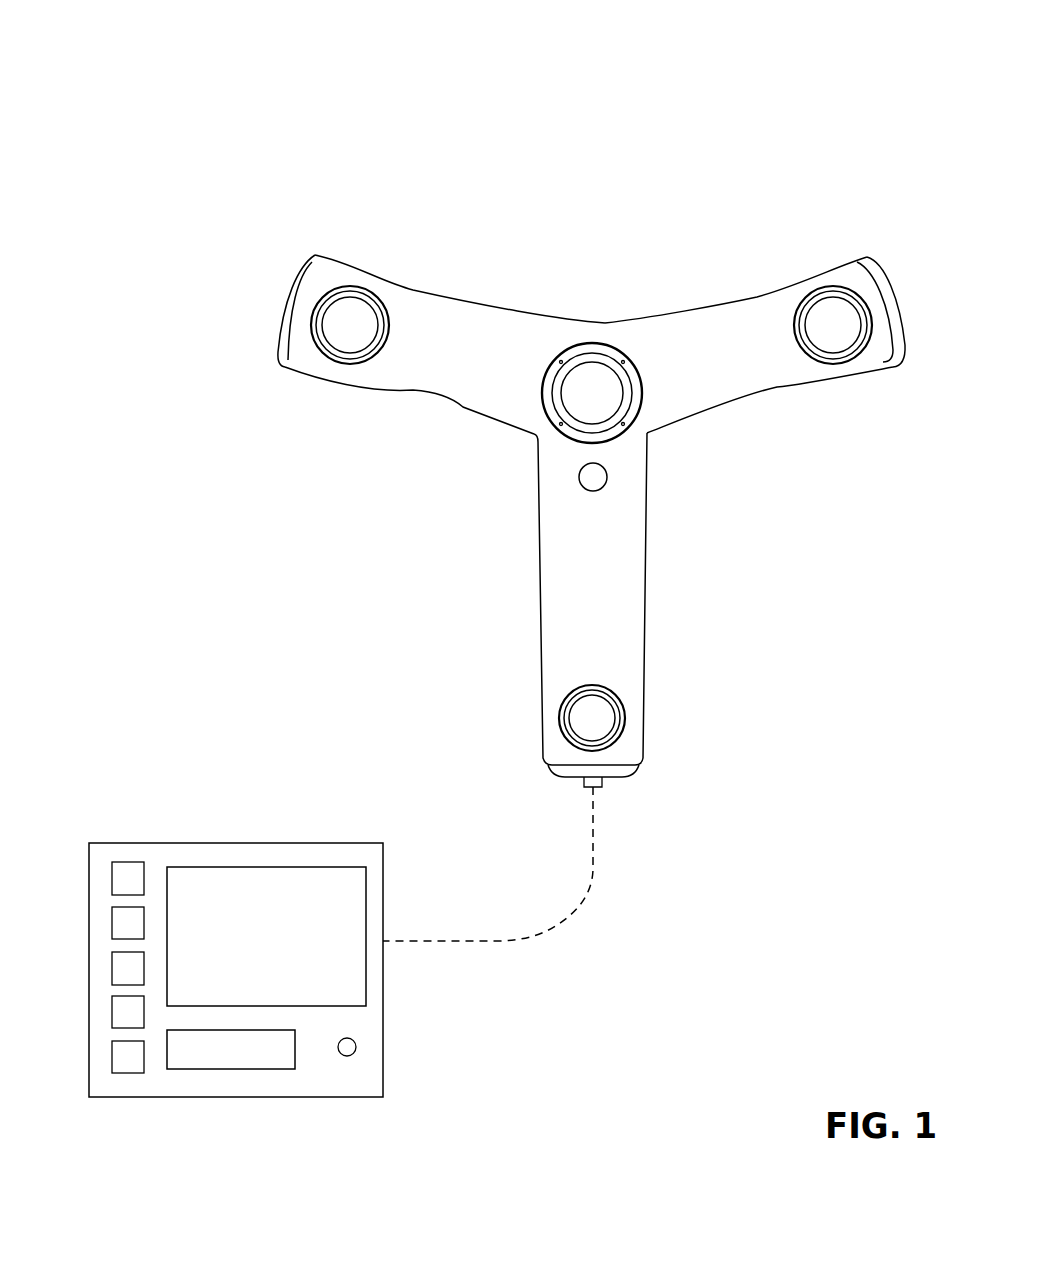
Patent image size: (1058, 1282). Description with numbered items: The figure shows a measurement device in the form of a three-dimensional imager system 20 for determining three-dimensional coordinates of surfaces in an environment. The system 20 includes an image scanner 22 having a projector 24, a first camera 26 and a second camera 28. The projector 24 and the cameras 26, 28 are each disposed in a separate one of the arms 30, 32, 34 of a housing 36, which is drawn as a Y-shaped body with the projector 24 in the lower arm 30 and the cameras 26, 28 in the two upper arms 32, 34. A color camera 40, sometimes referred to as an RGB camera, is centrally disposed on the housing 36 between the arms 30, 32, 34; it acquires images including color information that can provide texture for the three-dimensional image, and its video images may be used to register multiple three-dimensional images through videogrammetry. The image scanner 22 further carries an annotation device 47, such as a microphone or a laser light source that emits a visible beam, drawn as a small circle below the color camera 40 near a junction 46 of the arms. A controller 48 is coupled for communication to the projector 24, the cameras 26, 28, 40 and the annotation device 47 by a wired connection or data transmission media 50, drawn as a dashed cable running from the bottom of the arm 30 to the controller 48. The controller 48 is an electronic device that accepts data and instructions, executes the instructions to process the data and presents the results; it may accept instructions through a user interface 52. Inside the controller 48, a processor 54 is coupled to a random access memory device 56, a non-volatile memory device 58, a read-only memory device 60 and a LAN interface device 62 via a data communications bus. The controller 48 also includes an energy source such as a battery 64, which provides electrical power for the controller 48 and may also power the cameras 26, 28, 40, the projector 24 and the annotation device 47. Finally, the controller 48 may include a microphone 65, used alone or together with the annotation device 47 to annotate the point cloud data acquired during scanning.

The 3D imager system 20 is at (813, 100).
The image scanner 22 is at (882, 247).
The projector 24 is at (620, 728).
The first camera 26 is at (368, 305).
The second camera 28 is at (820, 303).
The arm 30 is at (543, 580).
The arm 32 is at (467, 407).
The arm 34 is at (733, 400).
The housing 36 is at (297, 280).
The color camera 40 is at (637, 425).
The junction 46 is at (528, 437).
The annotation device 47 is at (608, 482).
The controller 48 is at (348, 843).
The wired connection / data transmission media 50 is at (557, 925).
The user interface 52 is at (290, 867).
The processor 54 is at (130, 862).
The random access memory (RAM) device 56 is at (112, 913).
The non-volatile memory (NVM) device 58 is at (112, 960).
The read-only memory (ROM) device 60 is at (112, 1008).
The LAN interface device 62 is at (112, 1050).
The battery 64 is at (195, 1070).
The microphone 65 is at (358, 1047).